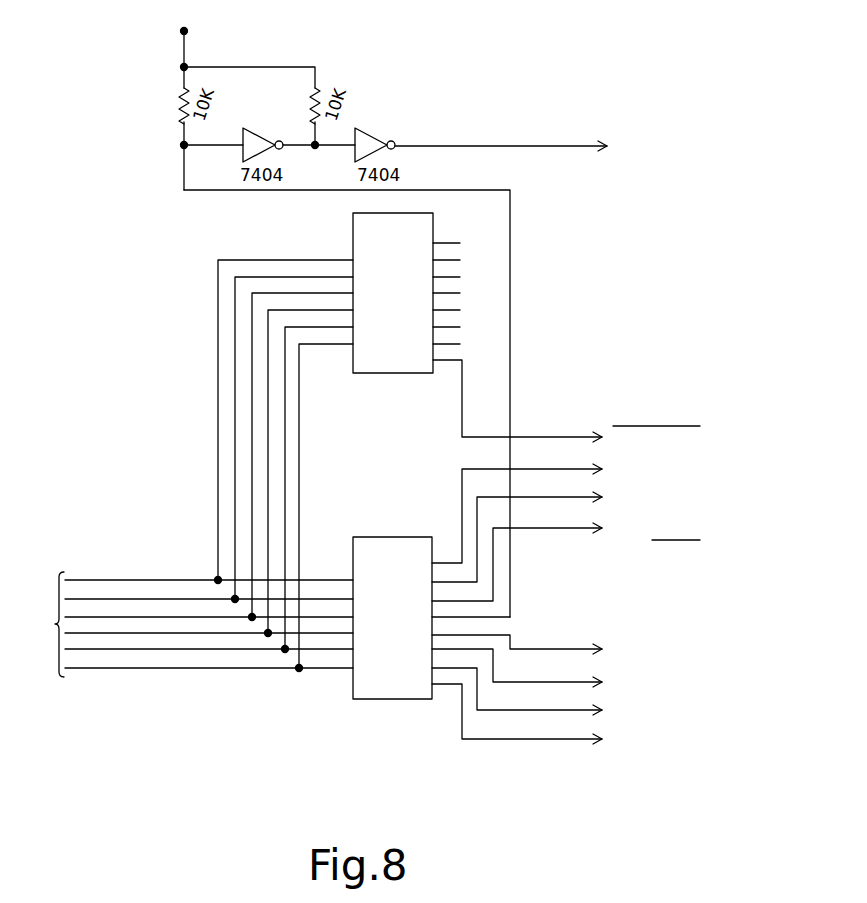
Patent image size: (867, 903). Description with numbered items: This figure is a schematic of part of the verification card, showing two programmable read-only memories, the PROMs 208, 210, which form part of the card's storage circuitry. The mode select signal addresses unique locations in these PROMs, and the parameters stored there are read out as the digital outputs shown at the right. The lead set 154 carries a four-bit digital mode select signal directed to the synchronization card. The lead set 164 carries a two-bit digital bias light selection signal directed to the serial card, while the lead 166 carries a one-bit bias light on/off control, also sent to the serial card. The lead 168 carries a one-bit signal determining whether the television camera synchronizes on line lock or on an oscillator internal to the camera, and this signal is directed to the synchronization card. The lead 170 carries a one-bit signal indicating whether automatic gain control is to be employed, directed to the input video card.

The lead 170 is at (604, 129).
The programmable read-only memory 210 is at (486, 226).
The programmable read-only memory 208 is at (278, 707).
The lead 168 is at (709, 448).
The lead set 164 is at (709, 457).
The lead 166 is at (709, 515).
The lead set 154 is at (703, 635).